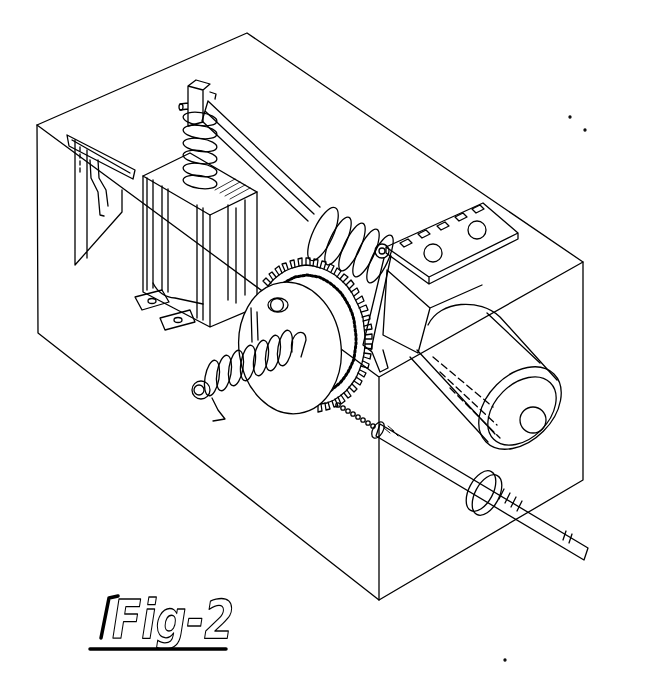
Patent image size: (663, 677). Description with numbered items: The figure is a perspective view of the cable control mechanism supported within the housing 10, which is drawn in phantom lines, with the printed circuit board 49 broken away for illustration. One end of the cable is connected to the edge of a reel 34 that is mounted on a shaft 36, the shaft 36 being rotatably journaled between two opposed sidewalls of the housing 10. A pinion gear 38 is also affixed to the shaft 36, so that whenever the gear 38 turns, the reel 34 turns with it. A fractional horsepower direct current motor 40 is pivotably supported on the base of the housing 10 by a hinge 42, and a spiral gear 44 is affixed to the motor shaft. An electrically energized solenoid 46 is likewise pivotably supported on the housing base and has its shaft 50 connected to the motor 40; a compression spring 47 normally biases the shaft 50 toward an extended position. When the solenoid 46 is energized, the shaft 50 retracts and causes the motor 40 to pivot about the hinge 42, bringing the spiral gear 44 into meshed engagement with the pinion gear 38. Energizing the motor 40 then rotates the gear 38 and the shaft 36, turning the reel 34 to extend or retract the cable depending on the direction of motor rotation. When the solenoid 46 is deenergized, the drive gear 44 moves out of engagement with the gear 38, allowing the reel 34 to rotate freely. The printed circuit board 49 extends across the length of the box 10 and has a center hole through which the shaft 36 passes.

The housing 10 is at (428, 154).
The reel 34 is at (310, 410).
The shaft 36 is at (198, 396).
The pinion gear 38 is at (398, 378).
The direct current motor 40 is at (522, 357).
The hinge 42 is at (450, 218).
The spiral gear 44 is at (345, 214).
The solenoid 46 is at (145, 263).
The compression spring 47 is at (188, 131).
The printed circuit board 49 is at (105, 140).
The solenoid shaft 50 is at (203, 84).